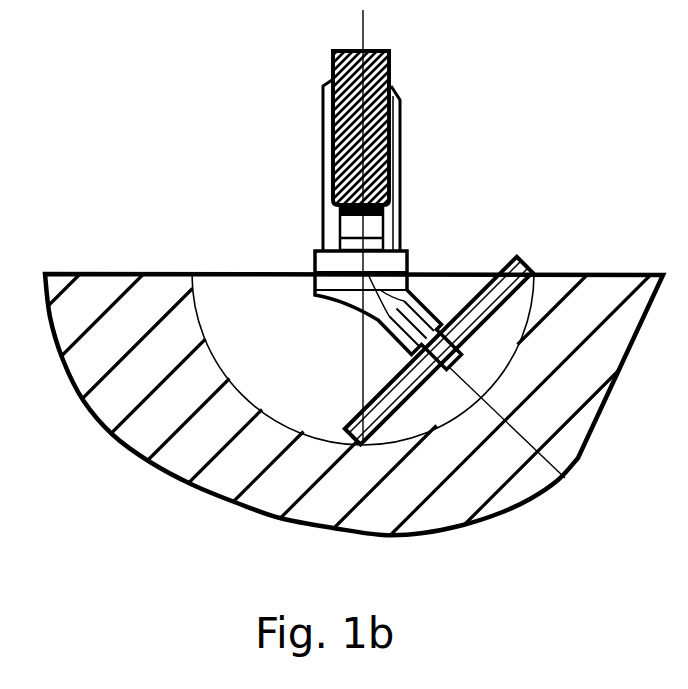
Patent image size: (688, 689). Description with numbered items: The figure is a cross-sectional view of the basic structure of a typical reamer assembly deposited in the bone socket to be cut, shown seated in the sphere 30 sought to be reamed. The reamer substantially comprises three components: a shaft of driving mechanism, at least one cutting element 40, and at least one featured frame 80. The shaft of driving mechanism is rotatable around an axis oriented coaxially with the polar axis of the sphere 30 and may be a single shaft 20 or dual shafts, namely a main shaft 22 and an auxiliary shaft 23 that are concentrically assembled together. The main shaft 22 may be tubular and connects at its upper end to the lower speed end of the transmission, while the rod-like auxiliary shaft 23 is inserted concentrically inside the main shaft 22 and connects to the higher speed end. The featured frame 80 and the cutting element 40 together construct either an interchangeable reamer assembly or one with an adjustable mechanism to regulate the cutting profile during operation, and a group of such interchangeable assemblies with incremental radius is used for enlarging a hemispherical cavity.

The single shaft 20 is at (412, 173).
The main shaft 22 is at (328, 193).
The auxiliary shaft 23 is at (388, 82).
The sphere 30 is at (200, 337).
The cutting element 40 is at (518, 256).
The featured frame 80 is at (332, 265).